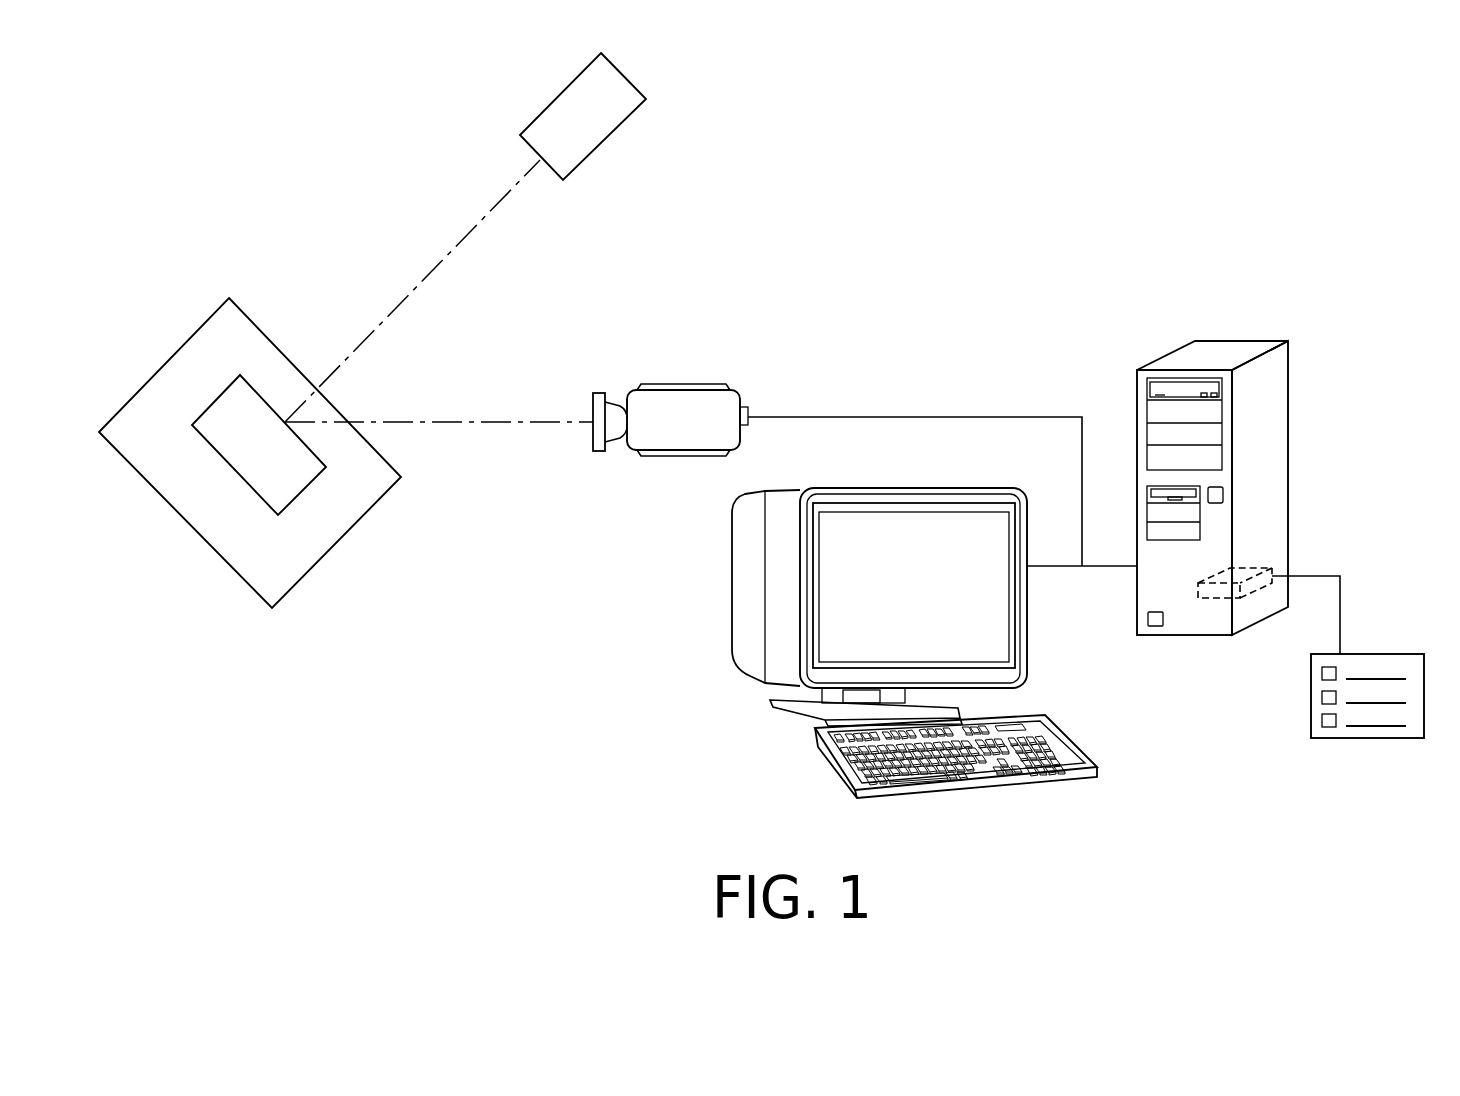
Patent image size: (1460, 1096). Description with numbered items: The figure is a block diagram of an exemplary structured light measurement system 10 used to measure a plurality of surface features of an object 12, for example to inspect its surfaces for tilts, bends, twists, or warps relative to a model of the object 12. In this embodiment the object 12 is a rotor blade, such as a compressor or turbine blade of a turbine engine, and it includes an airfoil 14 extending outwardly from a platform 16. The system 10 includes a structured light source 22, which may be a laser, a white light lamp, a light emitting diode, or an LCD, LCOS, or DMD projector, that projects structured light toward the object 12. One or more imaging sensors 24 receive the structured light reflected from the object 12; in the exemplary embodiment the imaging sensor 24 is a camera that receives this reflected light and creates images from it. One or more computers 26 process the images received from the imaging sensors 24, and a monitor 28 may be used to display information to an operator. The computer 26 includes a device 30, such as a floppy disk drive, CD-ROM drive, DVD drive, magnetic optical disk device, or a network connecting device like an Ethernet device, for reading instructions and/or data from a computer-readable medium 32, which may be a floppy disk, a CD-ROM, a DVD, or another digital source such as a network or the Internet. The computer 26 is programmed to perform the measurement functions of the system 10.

The structured light measurement system 10 is at (872, 138).
The object 12 is at (205, 262).
The airfoil 14 is at (292, 473).
The platform 16 is at (288, 573).
The structured light source 22 is at (570, 82).
The imaging sensor 24 is at (682, 385).
The computer 26 is at (1165, 355).
The monitor 28 is at (728, 585).
The device 30 is at (1218, 598).
The computer-readable medium 32 is at (1385, 652).